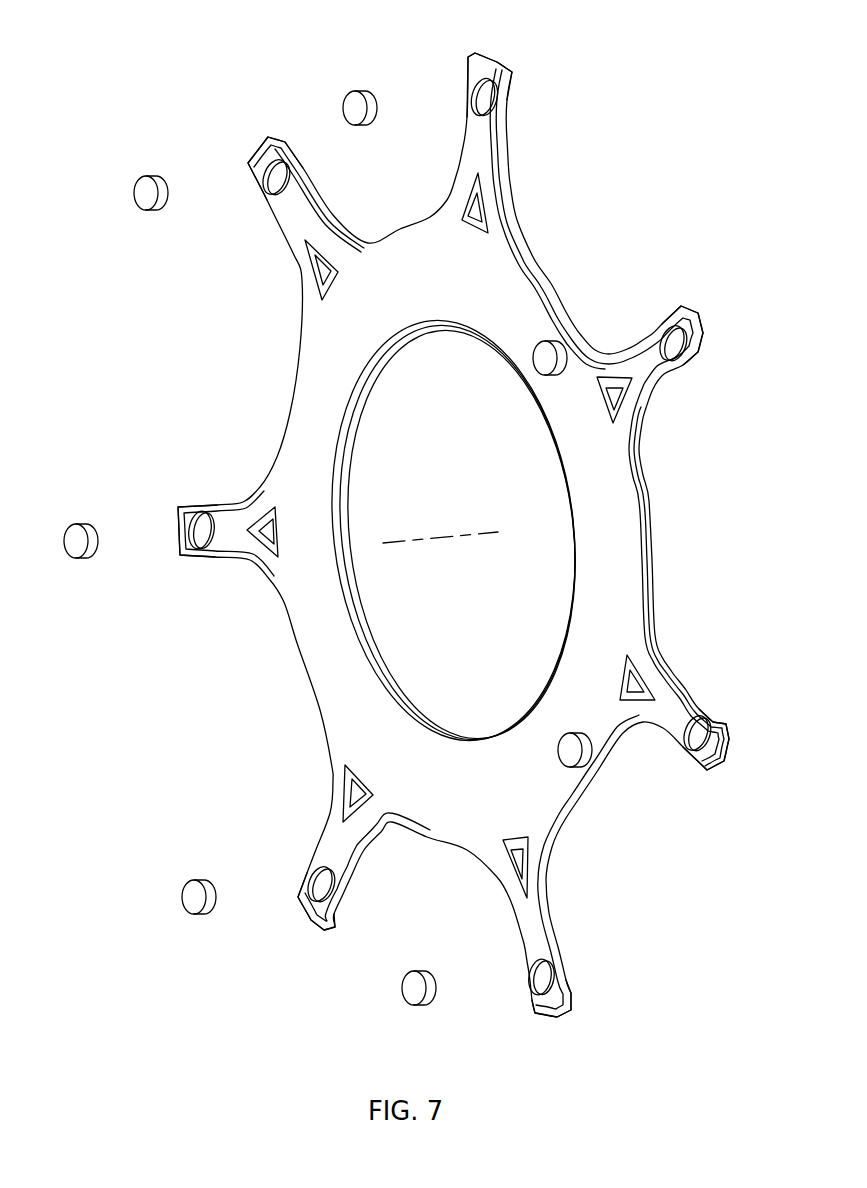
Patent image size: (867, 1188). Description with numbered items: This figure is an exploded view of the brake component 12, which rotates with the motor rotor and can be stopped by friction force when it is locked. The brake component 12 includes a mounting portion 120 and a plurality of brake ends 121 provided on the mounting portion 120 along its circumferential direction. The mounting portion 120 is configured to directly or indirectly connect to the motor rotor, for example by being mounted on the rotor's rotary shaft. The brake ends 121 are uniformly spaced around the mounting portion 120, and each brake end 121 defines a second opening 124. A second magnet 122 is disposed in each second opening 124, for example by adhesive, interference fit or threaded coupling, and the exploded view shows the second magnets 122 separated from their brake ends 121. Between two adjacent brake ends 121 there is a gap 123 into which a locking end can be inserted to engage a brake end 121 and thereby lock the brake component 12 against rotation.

The brake component 12 is at (105, 85).
The mounting portion 120 is at (583, 590).
The brake end 121 is at (503, 93).
The second magnet 122 is at (350, 107).
The gap 123 is at (200, 382).
The second opening 124 is at (267, 192).